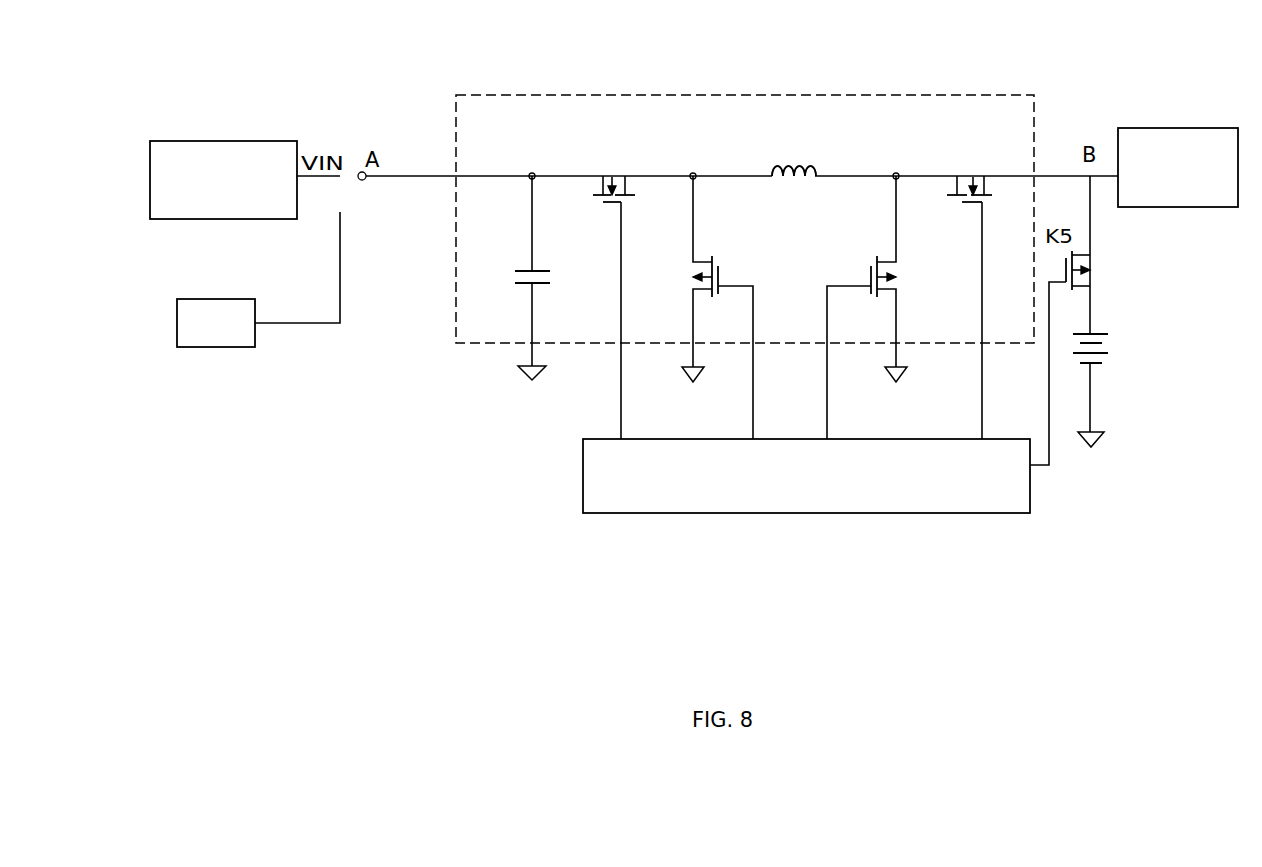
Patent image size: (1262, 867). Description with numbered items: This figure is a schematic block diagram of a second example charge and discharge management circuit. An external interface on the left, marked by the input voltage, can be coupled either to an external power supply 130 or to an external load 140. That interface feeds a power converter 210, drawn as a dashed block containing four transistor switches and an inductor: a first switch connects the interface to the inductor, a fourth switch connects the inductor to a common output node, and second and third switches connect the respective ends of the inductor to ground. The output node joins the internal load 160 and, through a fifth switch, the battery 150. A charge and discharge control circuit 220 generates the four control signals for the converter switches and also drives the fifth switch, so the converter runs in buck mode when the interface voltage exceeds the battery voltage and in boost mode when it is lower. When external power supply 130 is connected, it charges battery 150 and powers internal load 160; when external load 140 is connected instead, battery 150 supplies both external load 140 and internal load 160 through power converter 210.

The external power supply 130 is at (220, 141).
The external load 140 is at (220, 299).
The battery 150 is at (1110, 334).
The internal load 160 is at (1167, 128).
The power converter 210 is at (509, 128).
The charge and discharge control circuit 220 is at (1018, 487).